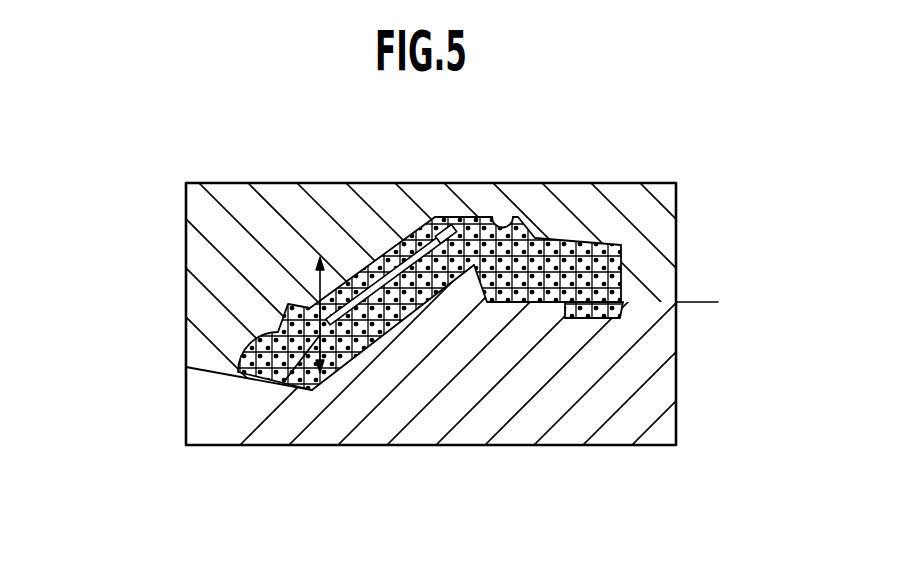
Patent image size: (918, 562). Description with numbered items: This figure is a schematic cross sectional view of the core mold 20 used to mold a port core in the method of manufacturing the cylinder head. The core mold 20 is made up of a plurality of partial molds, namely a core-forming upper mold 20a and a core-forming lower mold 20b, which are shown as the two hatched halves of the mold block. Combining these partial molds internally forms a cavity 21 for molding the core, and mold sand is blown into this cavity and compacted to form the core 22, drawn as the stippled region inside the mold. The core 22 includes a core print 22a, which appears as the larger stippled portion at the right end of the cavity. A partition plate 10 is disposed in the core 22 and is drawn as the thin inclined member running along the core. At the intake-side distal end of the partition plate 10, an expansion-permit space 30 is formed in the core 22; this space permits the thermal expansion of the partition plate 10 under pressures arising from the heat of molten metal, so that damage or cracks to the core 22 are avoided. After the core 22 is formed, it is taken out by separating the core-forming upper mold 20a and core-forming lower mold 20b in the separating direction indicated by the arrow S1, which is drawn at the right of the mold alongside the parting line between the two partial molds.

The partition plate 10 is at (400, 272).
The core mold 20 is at (452, 314).
The core-forming upper mold 20a is at (187, 257).
The core-forming lower mold 20b is at (95, 232).
The cavity 21 is at (507, 214).
The core 22 is at (388, 236).
The core print 22a is at (578, 262).
The expansion-permit space 30 is at (458, 212).
The separating direction S1 is at (710, 256).